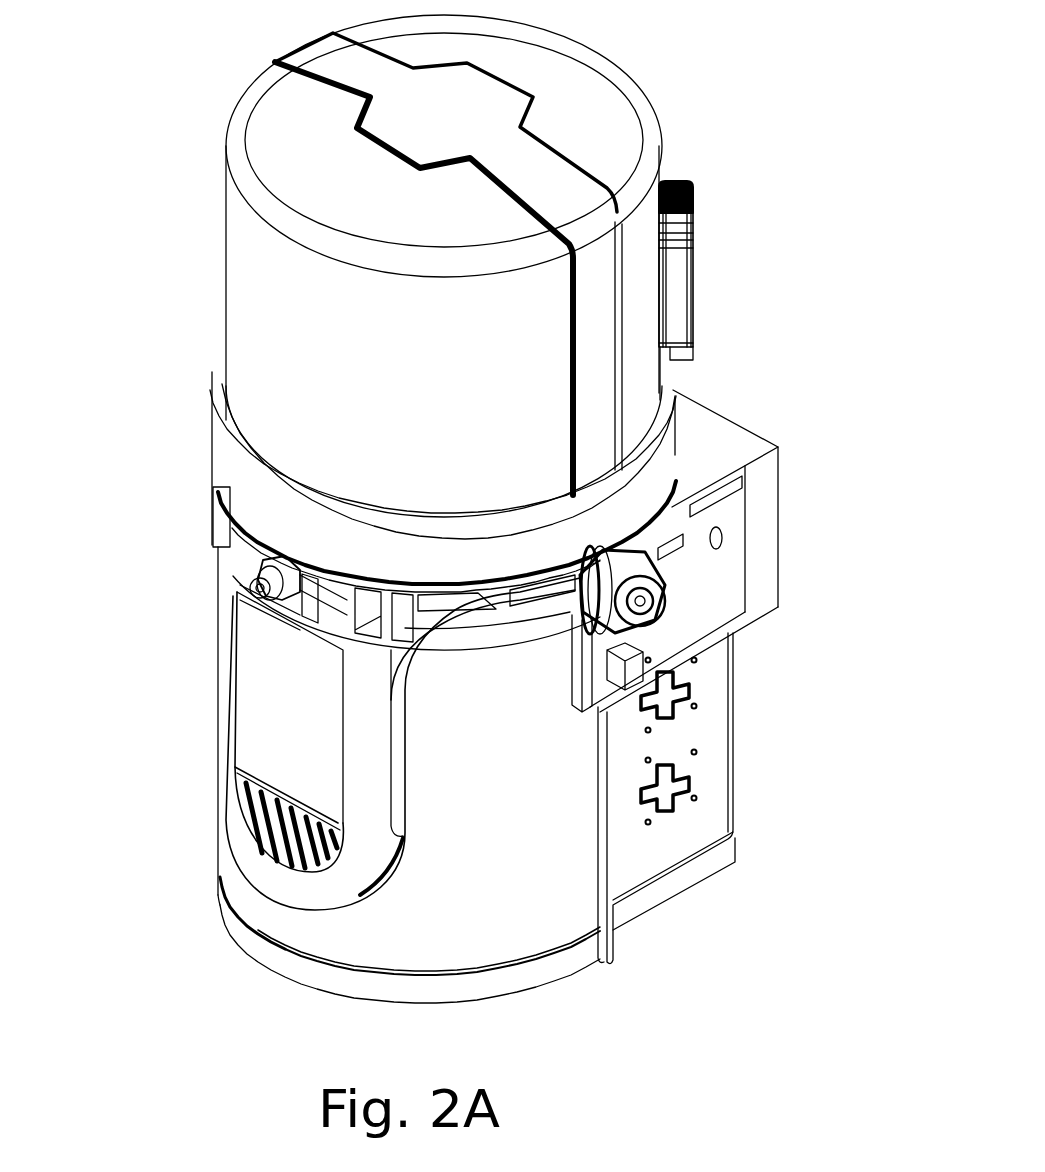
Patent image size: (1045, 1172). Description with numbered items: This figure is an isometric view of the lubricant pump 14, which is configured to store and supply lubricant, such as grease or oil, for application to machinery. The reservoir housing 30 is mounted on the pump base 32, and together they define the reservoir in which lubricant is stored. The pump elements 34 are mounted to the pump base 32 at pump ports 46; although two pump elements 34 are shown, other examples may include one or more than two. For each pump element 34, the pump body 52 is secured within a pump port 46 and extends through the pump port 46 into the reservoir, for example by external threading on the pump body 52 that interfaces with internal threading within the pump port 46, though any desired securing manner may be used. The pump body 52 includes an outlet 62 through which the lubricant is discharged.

The lubricant pump 14 is at (137, 213).
The reservoir housing 30 is at (583, 113).
The pump base 32 is at (553, 893).
The pump element 34 is at (663, 602).
The pump port 46 is at (590, 568).
The pump body 52 is at (637, 560).
The outlet 62 is at (643, 603).